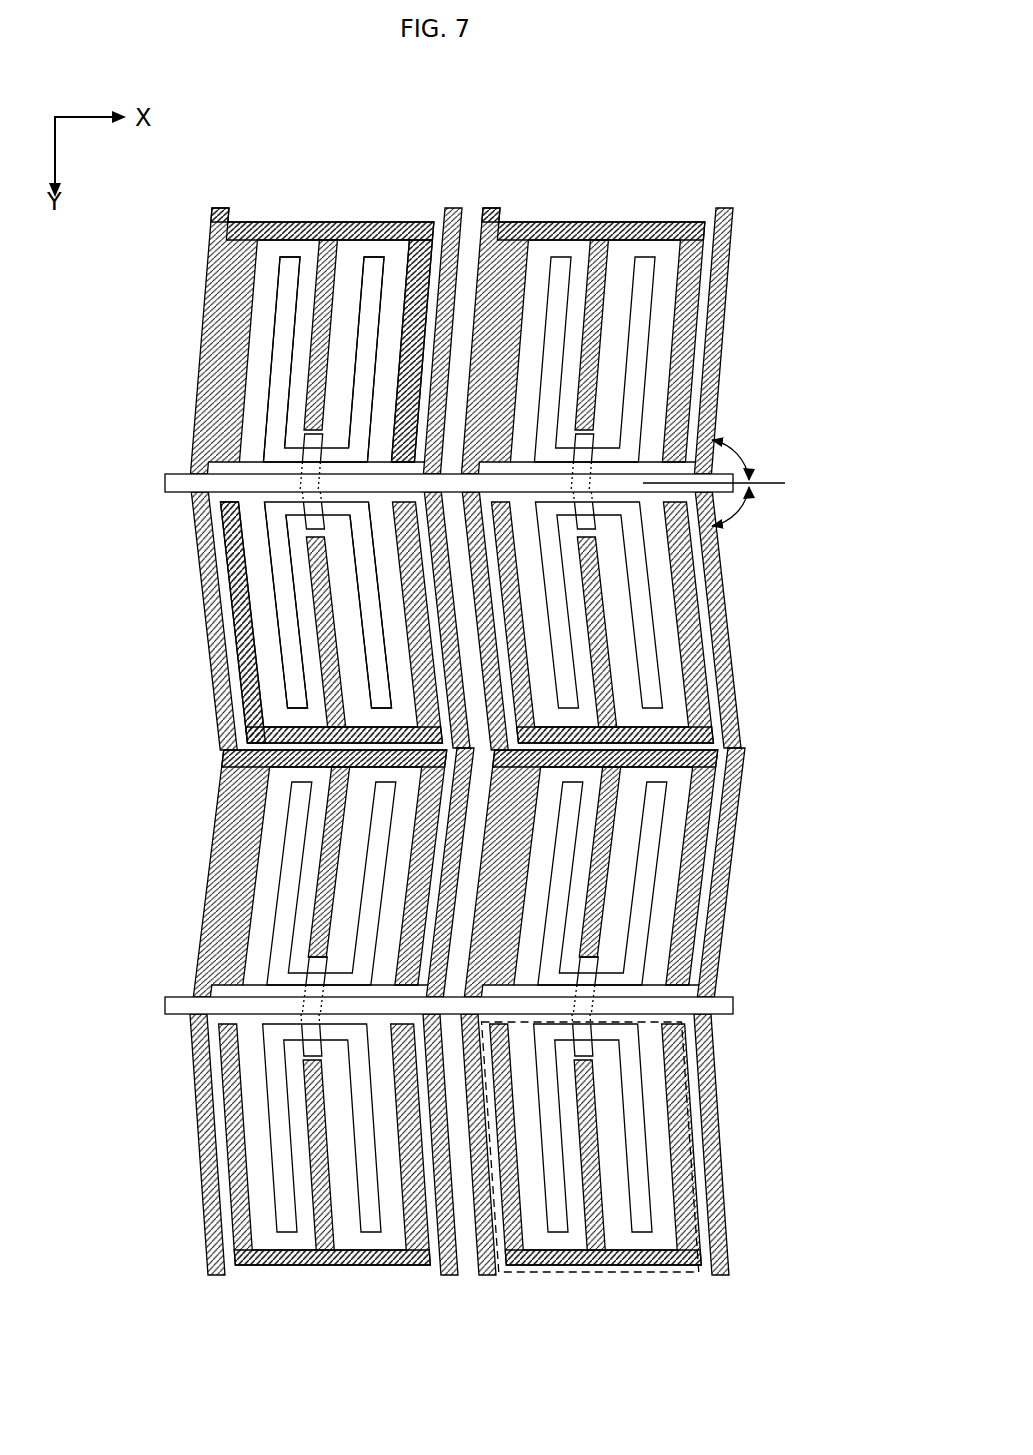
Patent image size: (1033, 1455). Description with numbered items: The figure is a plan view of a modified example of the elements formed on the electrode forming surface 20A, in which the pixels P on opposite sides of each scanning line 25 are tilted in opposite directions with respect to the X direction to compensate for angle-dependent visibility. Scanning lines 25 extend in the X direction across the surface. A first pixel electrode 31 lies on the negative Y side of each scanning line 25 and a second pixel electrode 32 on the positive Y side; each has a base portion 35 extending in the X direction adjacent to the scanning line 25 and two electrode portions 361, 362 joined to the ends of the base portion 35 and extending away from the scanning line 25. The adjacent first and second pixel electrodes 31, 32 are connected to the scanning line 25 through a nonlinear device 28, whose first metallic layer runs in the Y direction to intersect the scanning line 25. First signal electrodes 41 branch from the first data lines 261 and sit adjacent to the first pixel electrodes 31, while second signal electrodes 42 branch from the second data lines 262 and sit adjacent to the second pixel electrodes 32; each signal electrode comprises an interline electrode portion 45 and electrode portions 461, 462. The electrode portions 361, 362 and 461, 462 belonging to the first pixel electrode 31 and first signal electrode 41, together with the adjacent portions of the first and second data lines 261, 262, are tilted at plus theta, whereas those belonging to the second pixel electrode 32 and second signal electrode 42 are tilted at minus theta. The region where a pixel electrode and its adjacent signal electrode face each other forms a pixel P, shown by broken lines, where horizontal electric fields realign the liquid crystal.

The electrode forming surface 20A is at (716, 1358).
The scanning line 25 is at (168, 483).
The nonlinear device 28 is at (305, 432).
The first pixel electrode 31 is at (265, 355).
The second pixel electrode 32 is at (295, 610).
The base portion 35 is at (275, 452).
The first signal electrode 41 is at (300, 222).
The second signal electrode 42 is at (263, 597).
The interline electrode portion 45 is at (288, 220).
The first data line 261 is at (225, 206).
The second data line 262 is at (451, 208).
The electrode portion 361 is at (378, 250).
The electrode portion 362 is at (280, 275).
The electrode portion 461 is at (403, 245).
The electrode portion 462 is at (318, 248).
The pixel P is at (495, 1275).